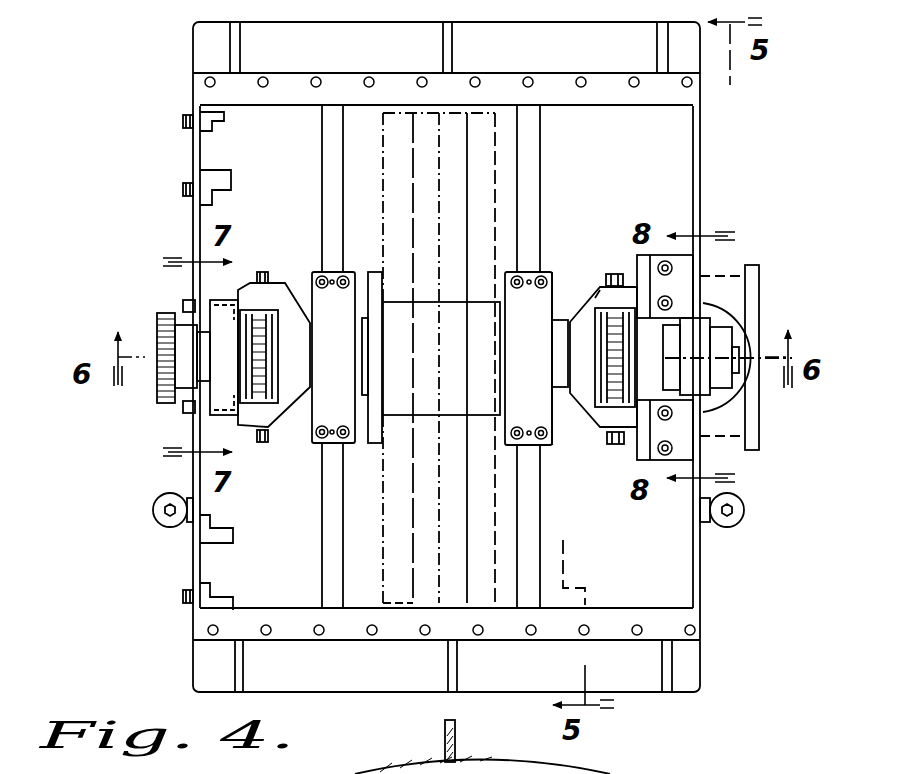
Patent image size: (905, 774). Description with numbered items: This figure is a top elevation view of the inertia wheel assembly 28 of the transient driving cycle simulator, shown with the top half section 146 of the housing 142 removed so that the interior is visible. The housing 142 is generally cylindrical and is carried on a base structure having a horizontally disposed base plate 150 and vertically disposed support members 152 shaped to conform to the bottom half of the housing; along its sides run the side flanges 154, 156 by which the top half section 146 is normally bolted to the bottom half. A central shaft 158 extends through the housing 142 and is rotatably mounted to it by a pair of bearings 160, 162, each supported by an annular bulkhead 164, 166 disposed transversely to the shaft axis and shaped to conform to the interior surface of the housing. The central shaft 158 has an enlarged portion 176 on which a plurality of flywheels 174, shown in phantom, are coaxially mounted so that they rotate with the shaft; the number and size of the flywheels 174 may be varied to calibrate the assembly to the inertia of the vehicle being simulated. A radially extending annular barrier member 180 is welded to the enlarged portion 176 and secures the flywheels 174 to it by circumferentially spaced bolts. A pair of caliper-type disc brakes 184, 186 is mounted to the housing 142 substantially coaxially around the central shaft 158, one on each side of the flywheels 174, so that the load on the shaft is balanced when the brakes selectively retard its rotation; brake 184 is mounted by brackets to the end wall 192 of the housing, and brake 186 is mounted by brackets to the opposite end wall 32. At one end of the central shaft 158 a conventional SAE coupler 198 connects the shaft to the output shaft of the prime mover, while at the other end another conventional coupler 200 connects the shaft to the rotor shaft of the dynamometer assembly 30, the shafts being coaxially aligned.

The inertia wheel assembly 28 is at (92, 186).
The housing 142 is at (706, 149).
The side flange 156 is at (295, 85).
The side flange 154 is at (285, 643).
The base plate 150 is at (372, 664).
The support member 152 is at (456, 665).
The end wall 192 is at (201, 148).
The flywheel 174 is at (392, 167).
The annular bulkhead 164 is at (331, 547).
The annular bulkhead 166 is at (528, 480).
The bearing 160 is at (330, 398).
The annular barrier member 180 is at (374, 444).
The brake 184 is at (268, 296).
The SAE coupler 198 is at (160, 396).
The bearing 162 is at (541, 410).
The central shaft 158 is at (565, 300).
The enlarged portion 176 is at (501, 282).
The brake 186 is at (595, 298).
The dynamometer assembly 30 is at (764, 266).
The coupler 200 is at (732, 325).
The end wall 32 is at (705, 545).
The top half section 146 is at (505, 747).